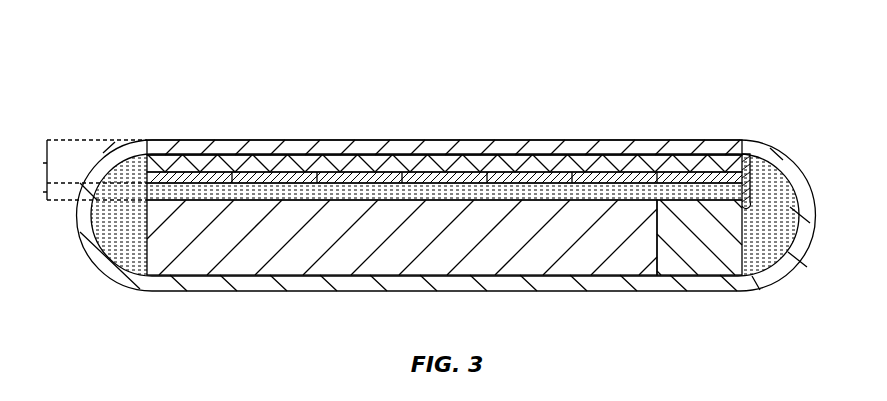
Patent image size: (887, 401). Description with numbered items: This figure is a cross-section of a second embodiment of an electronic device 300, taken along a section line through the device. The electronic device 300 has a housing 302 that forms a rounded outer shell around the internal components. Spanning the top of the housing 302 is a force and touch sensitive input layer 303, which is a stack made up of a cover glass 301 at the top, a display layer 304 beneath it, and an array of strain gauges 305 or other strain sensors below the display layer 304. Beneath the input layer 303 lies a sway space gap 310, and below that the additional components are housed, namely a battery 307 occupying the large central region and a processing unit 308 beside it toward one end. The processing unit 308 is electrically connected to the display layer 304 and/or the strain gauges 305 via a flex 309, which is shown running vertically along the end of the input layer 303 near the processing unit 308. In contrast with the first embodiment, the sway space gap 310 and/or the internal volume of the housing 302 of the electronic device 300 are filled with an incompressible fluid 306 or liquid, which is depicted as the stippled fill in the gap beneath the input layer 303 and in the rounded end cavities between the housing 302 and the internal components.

The electronic device 300 is at (121, 70).
The cover glass 301 is at (240, 140).
The housing 302 is at (815, 210).
The force and touch sensitive input layer 303 is at (79, 170).
The display layer 304 is at (365, 155).
The array of strain gauges 305 is at (538, 172).
The incompressible fluid 306 is at (93, 213).
The battery 307 is at (365, 276).
The processing unit 308 is at (718, 277).
The flex 309 is at (757, 182).
The sway space gap 310 is at (377, 192).